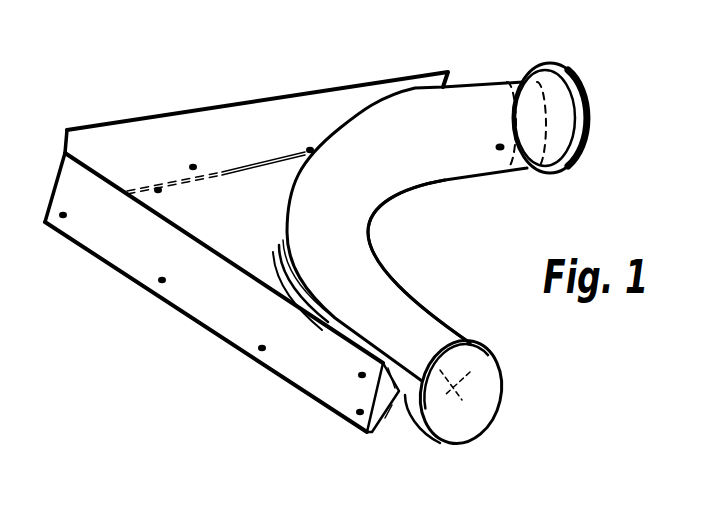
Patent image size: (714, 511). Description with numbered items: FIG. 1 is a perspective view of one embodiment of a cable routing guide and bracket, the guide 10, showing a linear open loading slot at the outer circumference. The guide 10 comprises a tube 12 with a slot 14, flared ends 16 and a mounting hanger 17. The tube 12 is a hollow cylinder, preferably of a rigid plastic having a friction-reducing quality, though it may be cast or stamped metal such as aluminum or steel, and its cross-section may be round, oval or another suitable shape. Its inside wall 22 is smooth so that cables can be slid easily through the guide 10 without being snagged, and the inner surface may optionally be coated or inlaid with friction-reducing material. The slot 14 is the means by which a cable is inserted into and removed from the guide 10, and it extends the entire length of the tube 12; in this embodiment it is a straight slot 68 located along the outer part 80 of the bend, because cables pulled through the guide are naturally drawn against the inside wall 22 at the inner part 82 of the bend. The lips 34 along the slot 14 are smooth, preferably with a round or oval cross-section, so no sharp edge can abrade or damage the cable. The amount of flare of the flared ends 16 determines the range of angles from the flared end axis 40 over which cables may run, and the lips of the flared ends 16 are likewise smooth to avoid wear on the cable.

The cable routing guide and bracket 10 is at (288, 82).
The tube 12 is at (373, 150).
The slot 14 is at (322, 312).
The flared ends 16 is at (463, 410).
The mounting hanger 17 is at (197, 135).
The inside wall 22 is at (435, 393).
The lips 34 is at (293, 287).
The flared end axis 40 is at (475, 403).
The straight slot 68 is at (358, 414).
The outer part 80 is at (317, 235).
The inner part 82 is at (382, 190).